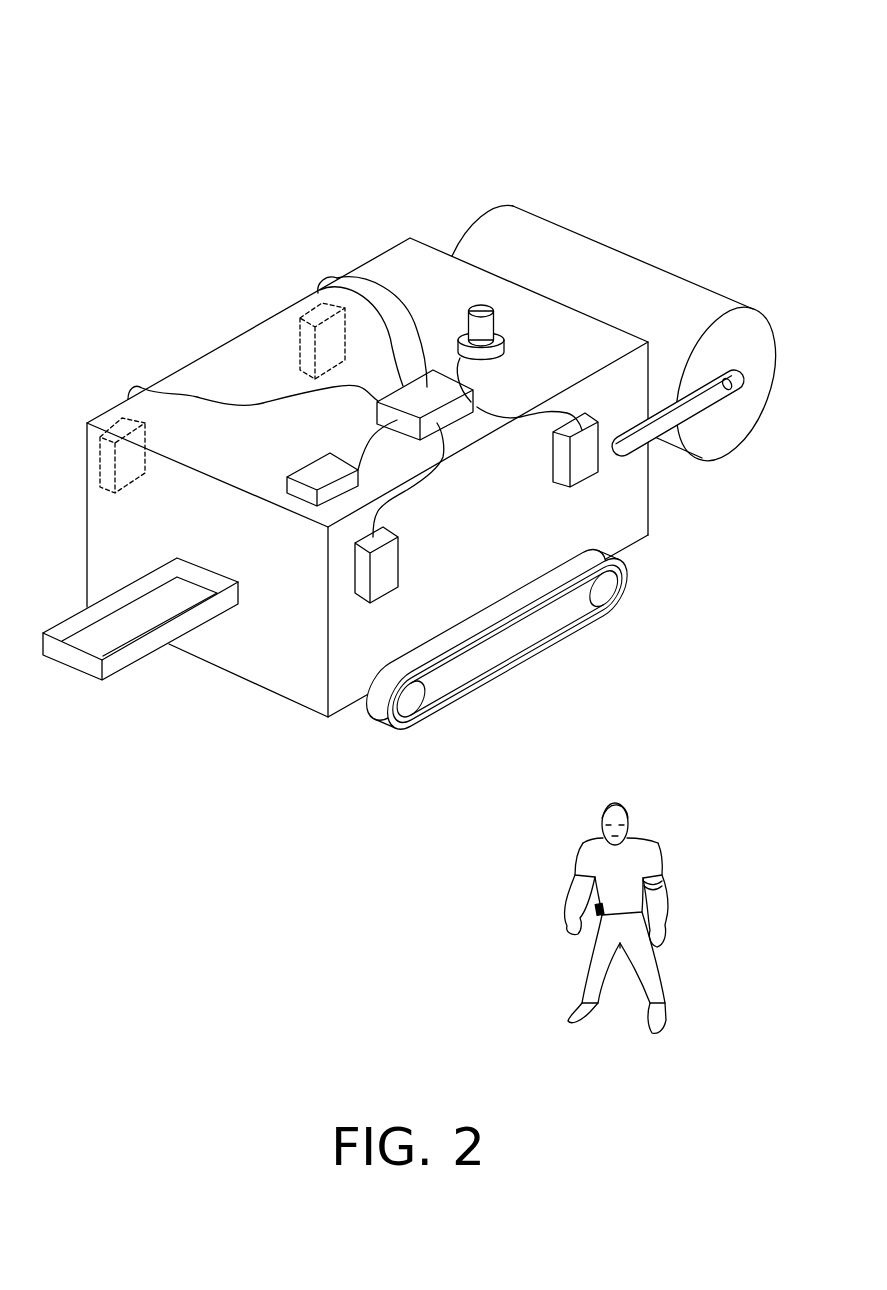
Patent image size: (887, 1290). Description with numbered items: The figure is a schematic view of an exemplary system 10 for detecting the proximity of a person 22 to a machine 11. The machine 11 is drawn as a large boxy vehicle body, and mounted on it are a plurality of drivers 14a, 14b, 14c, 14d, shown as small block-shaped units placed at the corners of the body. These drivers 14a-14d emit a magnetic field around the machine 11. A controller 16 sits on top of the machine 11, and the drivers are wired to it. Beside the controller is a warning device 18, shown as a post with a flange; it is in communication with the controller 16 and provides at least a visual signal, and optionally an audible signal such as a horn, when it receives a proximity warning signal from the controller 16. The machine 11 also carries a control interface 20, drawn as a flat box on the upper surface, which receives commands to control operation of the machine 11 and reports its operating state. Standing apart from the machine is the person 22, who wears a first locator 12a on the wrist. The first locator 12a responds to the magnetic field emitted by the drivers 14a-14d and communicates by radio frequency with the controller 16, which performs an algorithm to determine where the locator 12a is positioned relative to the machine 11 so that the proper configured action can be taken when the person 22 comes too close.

The system 10 is at (118, 100).
The machine 11 is at (117, 521).
The first locator 12a is at (596, 907).
The driver 14a is at (383, 572).
The driver 14b is at (580, 460).
The driver 14c is at (307, 345).
The driver 14d is at (107, 460).
The controller 16 is at (427, 387).
The warning device 18 is at (504, 334).
The control interface 20 is at (310, 488).
The person 22 is at (623, 805).